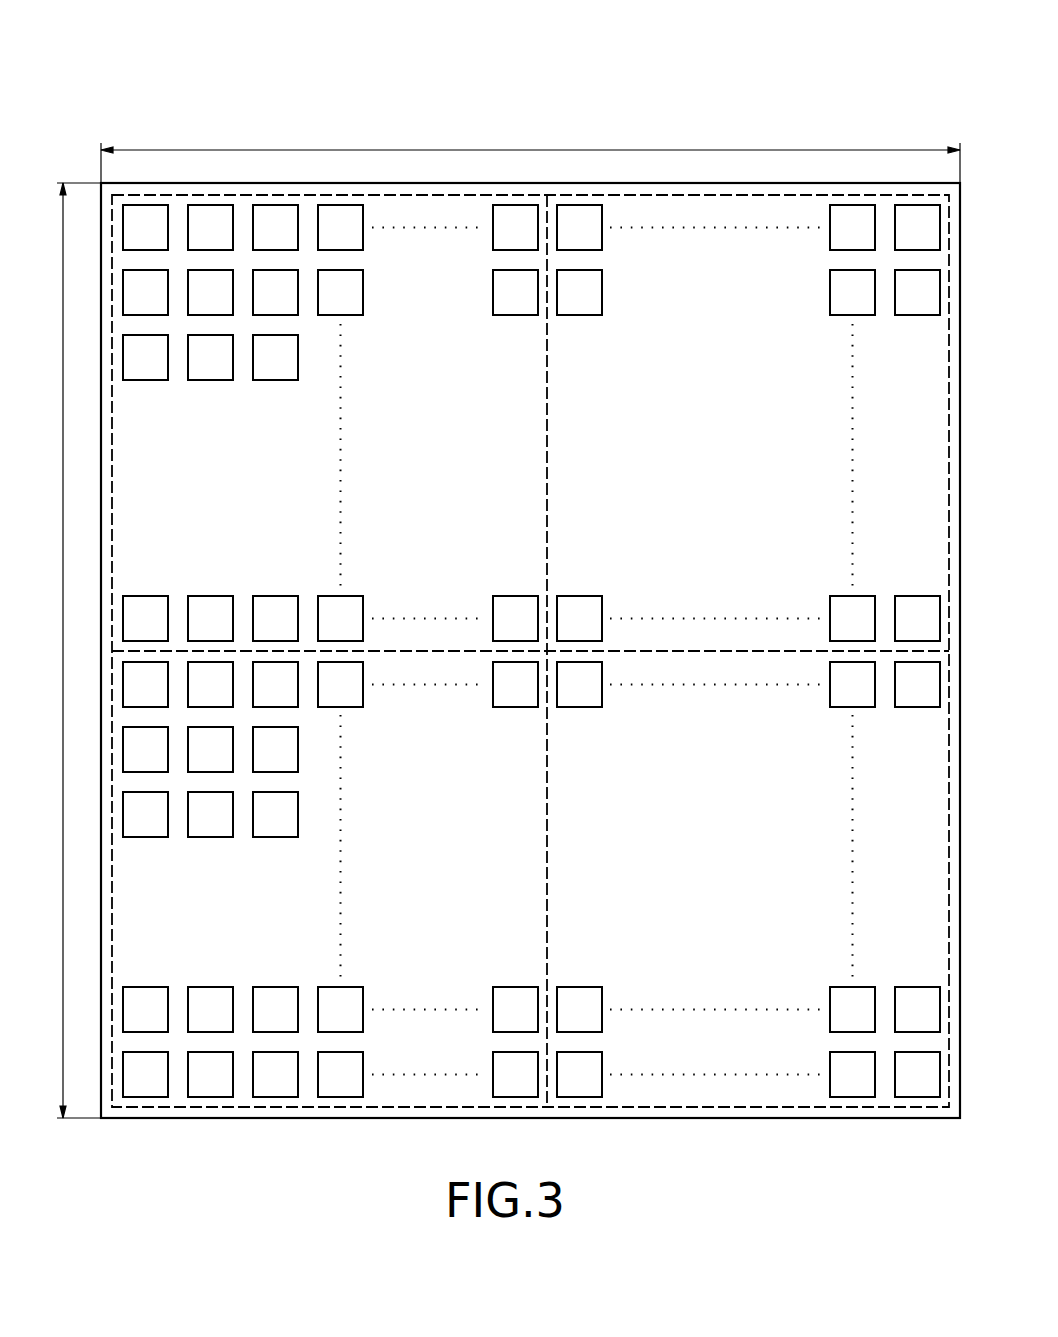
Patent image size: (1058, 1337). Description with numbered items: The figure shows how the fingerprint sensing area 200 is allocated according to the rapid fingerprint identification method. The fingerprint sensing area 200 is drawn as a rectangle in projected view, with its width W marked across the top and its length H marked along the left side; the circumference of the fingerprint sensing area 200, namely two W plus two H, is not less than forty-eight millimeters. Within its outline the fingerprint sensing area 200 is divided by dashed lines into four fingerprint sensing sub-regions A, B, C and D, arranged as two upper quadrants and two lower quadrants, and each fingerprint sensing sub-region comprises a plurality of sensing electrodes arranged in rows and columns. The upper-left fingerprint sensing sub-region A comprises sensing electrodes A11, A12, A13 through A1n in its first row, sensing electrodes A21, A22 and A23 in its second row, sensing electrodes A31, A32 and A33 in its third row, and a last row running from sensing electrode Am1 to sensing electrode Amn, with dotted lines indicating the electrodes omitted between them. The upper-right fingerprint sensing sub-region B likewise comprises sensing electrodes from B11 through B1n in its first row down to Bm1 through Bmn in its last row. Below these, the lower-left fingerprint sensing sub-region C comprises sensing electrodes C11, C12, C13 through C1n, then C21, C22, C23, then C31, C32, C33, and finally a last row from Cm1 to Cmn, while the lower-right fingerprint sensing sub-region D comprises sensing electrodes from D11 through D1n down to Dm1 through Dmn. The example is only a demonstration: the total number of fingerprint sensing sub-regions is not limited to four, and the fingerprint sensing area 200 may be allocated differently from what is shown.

The fingerprint sensing area 200 is at (521, 46).
The width W is at (530, 151).
The length H is at (70, 650).
The fingerprint sensing sub-region A is at (330, 423).
The fingerprint sensing sub-region B is at (748, 423).
The fingerprint sensing sub-region C is at (330, 879).
The fingerprint sensing sub-region D is at (748, 879).
The sensing electrode A11 is at (145, 227).
The sensing electrode A12 is at (210, 227).
The sensing electrode A13 is at (275, 227).
The sensing electrode A1n is at (515, 227).
The sensing electrode A21 is at (145, 292).
The sensing electrode A22 is at (210, 292).
The sensing electrode A23 is at (275, 292).
The sensing electrode A31 is at (145, 357).
The sensing electrode A32 is at (210, 357).
The sensing electrode A33 is at (275, 357).
The sensing electrode Am1 is at (145, 618).
The sensing electrode Amn is at (515, 618).
The sensing electrode B11 is at (579, 227).
The sensing electrode B1n is at (917, 227).
The sensing electrode Bm1 is at (579, 618).
The sensing electrode Bmn is at (917, 618).
The sensing electrode C11 is at (145, 684).
The sensing electrode C12 is at (210, 684).
The sensing electrode C13 is at (275, 684).
The sensing electrode C1n is at (515, 684).
The sensing electrode C21 is at (145, 749).
The sensing electrode C22 is at (210, 749).
The sensing electrode C23 is at (275, 749).
The sensing electrode C31 is at (145, 814).
The sensing electrode C32 is at (210, 814).
The sensing electrode C33 is at (275, 814).
The sensing electrode Cm1 is at (145, 1074).
The sensing electrode Cmn is at (515, 1074).
The sensing electrode D11 is at (579, 684).
The sensing electrode D1n is at (917, 684).
The sensing electrode Dm1 is at (579, 1074).
The sensing electrode Dmn is at (917, 1074).